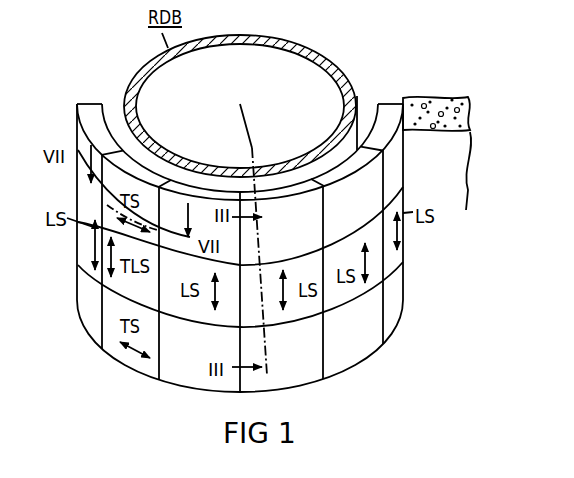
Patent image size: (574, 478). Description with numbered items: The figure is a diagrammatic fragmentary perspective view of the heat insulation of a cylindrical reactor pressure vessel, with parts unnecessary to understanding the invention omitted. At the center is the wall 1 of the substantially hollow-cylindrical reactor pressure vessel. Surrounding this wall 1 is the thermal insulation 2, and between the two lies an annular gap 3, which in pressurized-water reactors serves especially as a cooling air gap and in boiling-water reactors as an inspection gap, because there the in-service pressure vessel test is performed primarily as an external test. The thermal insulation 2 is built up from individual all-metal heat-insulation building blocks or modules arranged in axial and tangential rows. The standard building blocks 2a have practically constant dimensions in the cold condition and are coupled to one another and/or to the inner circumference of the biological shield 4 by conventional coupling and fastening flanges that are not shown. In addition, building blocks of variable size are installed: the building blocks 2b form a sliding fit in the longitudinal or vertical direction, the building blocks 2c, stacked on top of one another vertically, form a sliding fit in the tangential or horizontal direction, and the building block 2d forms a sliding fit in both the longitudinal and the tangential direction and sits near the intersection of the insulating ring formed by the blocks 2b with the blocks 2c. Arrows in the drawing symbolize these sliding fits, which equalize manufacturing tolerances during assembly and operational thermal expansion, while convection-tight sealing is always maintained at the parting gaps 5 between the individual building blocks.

The wall 1 is at (310, 49).
The thermal insulation 2 is at (403, 166).
The standard building block 2a is at (363, 247).
The heat-insulation building block 2b is at (404, 230).
The heat-insulation building block 2c is at (115, 332).
The heat-insulation building block 2d is at (158, 292).
The annular gap 3 is at (365, 128).
The biological shield 4 is at (468, 108).
The parting gaps 5 is at (343, 307).